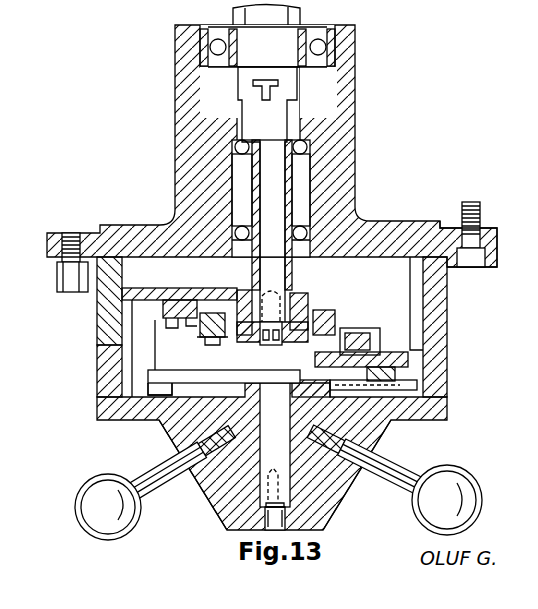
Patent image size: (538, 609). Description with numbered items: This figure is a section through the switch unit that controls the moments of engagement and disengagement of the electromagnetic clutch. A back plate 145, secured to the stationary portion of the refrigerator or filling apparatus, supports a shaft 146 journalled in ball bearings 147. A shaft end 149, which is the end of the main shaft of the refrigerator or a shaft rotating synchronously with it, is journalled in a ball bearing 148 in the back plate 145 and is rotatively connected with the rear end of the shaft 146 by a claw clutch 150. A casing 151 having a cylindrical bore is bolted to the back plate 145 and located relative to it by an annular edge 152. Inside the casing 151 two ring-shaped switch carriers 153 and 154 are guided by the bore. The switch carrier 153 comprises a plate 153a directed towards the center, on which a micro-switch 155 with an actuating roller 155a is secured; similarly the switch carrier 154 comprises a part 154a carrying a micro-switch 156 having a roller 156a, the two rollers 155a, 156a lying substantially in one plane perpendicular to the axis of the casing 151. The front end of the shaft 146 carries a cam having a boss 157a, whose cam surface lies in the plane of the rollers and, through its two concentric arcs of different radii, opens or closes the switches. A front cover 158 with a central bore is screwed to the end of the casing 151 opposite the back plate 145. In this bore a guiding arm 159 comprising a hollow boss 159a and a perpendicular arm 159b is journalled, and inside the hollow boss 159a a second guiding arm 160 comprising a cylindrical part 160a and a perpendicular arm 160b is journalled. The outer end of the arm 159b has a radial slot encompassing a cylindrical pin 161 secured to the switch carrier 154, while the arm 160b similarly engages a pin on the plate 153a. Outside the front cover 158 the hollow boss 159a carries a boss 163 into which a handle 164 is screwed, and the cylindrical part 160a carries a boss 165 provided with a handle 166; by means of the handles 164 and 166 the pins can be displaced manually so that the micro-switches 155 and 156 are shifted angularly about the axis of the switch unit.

The back plate 145 is at (357, 184).
The shaft 146 is at (266, 143).
The ball bearings 147 is at (293, 140).
The ball bearing 148 is at (317, 58).
The shaft end 149 is at (272, 52).
The claw clutch 150 is at (262, 89).
The casing 151 is at (448, 312).
The annular edge 152 is at (446, 272).
The switch carrier 153 is at (128, 272).
The plate 153a is at (217, 281).
The switch carrier 154 is at (128, 373).
The part 154a is at (410, 354).
The micro-switch 155 is at (180, 300).
The actuating roller 155a is at (200, 333).
The micro-switch 156 is at (370, 337).
The roller 156a is at (330, 323).
The boss 157a is at (305, 305).
The front cover 158 is at (404, 408).
The guiding arm 159 is at (301, 372).
The hollow boss 159a is at (266, 472).
The arm 159b is at (417, 386).
The guiding arm 160 is at (243, 366).
The cylindrical part 160a is at (270, 480).
The arm 160b is at (148, 386).
The cylindrical pin 161 is at (397, 372).
The boss 163 is at (183, 438).
The handle 164 is at (142, 478).
The boss 165 is at (343, 485).
The handle 166 is at (393, 464).